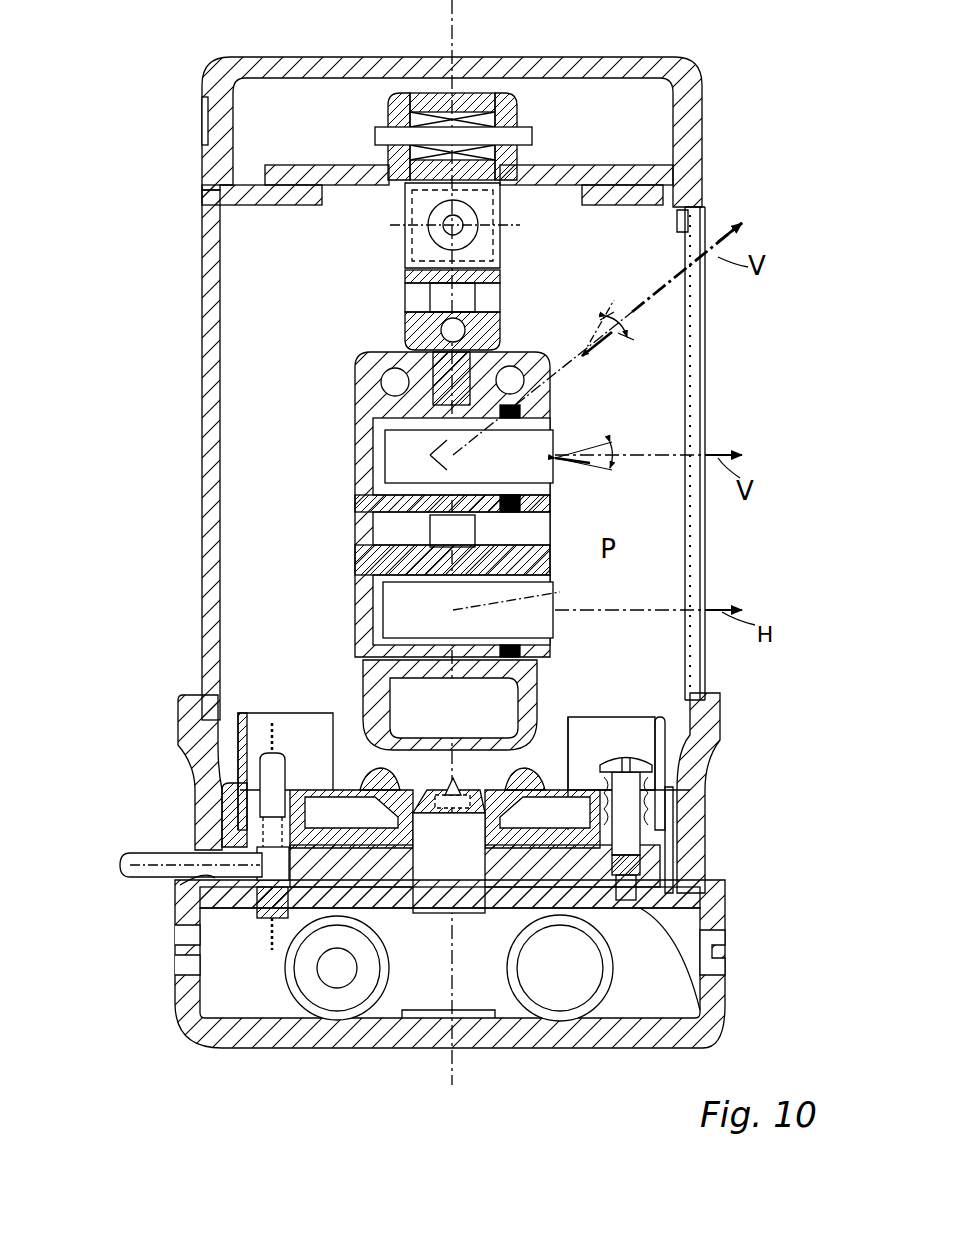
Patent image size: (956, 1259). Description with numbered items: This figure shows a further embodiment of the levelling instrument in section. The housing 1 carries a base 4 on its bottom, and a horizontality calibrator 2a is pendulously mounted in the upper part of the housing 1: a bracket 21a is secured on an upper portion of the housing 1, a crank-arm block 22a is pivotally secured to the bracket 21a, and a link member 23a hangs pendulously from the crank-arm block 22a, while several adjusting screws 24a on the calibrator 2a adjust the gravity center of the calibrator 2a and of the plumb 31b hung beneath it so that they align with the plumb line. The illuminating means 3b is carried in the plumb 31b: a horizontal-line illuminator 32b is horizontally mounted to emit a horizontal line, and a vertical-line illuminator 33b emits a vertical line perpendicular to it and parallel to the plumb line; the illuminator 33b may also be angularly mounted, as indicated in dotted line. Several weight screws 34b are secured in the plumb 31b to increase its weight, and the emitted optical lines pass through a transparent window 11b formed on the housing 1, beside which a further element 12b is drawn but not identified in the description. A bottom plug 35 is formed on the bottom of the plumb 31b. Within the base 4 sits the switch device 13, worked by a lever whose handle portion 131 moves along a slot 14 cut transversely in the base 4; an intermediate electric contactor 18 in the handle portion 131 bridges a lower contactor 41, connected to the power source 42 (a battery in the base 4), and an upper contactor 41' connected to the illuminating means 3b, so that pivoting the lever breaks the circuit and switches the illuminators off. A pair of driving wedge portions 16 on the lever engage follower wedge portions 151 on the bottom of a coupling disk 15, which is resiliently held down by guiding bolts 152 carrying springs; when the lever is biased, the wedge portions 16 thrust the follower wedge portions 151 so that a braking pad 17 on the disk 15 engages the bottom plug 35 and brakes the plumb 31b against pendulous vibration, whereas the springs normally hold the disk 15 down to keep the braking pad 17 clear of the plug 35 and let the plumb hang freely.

The housing 1 is at (724, 182).
The horizontality calibrator 2a is at (558, 112).
The illuminating means 3b is at (336, 455).
The base 4 is at (730, 1022).
The transparent window 11b is at (706, 572).
The side panel 12b is at (706, 412).
The switch device 13 is at (706, 952).
The slot 14 is at (188, 872).
The coupling disk 15 is at (560, 848).
The driving wedge portions 16 is at (440, 813).
The braking pad 17 is at (642, 840).
The intermediate electric contactor 18 is at (240, 852).
The bracket 21a is at (402, 118).
The crank-arm block 22a is at (490, 100).
The link member 23a is at (406, 262).
The adjusting screws 24a is at (410, 336).
The plumb 31b is at (405, 520).
The horizontal-line illuminator 32b is at (556, 630).
The vertical-line illuminator 33b is at (555, 438).
The weight screws 34b is at (395, 380).
The bottom plug 35 is at (600, 740).
The lower contactor 41 is at (198, 956).
The upper contactor 41' is at (180, 785).
The power source 42 is at (337, 992).
The handle portion 131 is at (120, 866).
The follower wedge portions 151 is at (682, 1025).
The guiding bolts 152 is at (630, 792).